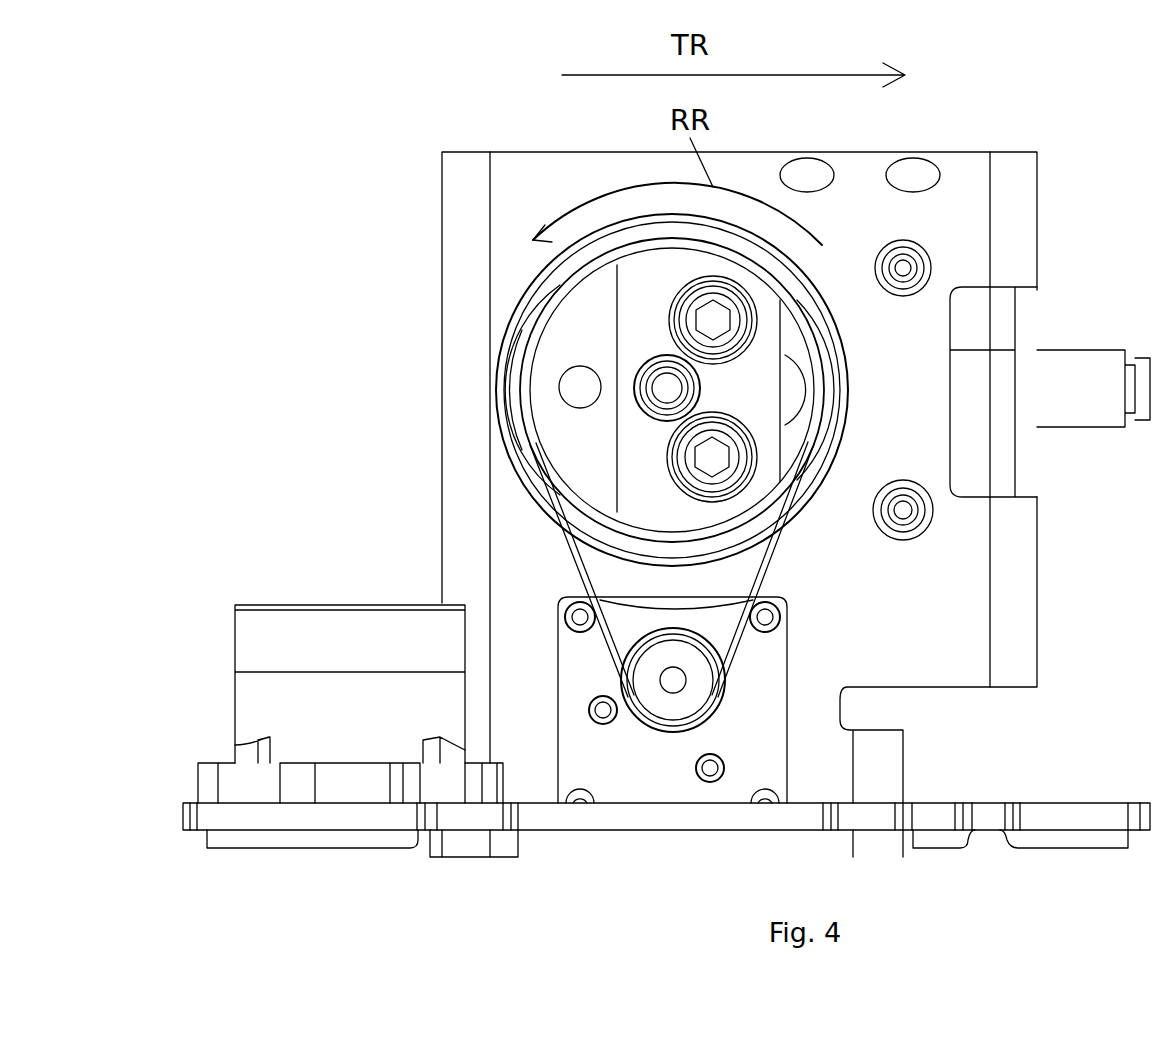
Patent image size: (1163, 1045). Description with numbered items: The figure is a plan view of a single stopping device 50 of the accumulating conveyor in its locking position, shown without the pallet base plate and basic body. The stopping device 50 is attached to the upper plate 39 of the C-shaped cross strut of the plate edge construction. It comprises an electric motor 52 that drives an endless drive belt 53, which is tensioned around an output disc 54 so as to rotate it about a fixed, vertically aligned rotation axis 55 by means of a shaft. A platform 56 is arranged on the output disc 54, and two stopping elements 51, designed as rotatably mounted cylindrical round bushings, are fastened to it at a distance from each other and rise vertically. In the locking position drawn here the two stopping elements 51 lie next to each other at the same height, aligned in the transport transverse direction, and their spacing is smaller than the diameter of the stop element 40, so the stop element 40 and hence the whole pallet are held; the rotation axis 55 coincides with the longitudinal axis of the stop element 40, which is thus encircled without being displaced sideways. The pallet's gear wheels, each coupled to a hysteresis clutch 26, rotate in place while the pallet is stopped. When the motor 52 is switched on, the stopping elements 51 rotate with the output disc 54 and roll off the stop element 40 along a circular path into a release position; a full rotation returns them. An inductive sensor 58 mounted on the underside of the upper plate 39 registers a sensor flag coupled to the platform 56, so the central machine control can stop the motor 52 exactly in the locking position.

The hysteresis clutch 26 is at (268, 635).
The upper plate 39 is at (953, 190).
The stop element 40 is at (697, 360).
The stopping device 50 is at (776, 351).
The stopping elements 51 is at (699, 466).
The motor 52 is at (663, 721).
The drive belt 53 is at (570, 555).
The output disc 54 is at (547, 435).
The rotation axis 55 is at (675, 395).
The platform 56 is at (643, 305).
The inductive sensor 58 is at (1070, 370).